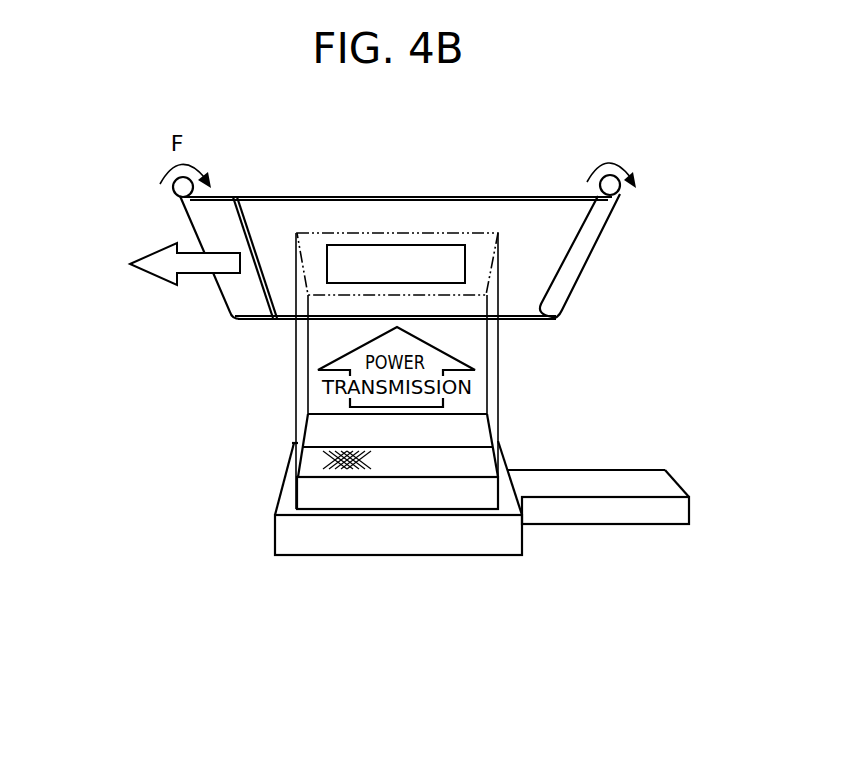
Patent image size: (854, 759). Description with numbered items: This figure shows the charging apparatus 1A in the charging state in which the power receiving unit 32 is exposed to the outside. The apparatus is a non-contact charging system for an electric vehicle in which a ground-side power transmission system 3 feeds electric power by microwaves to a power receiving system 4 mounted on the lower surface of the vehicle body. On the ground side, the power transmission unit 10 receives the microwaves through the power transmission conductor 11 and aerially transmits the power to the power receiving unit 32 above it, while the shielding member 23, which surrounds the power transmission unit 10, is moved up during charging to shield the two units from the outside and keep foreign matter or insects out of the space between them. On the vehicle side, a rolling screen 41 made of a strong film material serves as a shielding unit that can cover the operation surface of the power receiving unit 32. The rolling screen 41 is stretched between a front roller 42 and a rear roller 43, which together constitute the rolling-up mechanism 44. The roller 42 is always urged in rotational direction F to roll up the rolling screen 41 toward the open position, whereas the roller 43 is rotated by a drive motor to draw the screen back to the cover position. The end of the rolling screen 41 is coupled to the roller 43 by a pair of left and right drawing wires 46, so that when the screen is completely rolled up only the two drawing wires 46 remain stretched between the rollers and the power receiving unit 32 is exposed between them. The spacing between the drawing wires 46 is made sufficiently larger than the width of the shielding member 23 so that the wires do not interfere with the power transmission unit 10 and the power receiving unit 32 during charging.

The charging apparatus 1A is at (700, 335).
The power transmission system 3 is at (556, 435).
The power receiving system 4 is at (662, 195).
The power transmission unit 10 is at (340, 453).
The power transmission conductor 11 is at (657, 487).
The shielding member 23 is at (373, 495).
The power receiving unit 32 is at (390, 262).
The rolling screen 41 is at (220, 210).
The roller 42 is at (180, 190).
The roller 43 is at (583, 238).
The rolling-up mechanism 44 is at (128, 179).
The drawing wires 46 is at (513, 197).